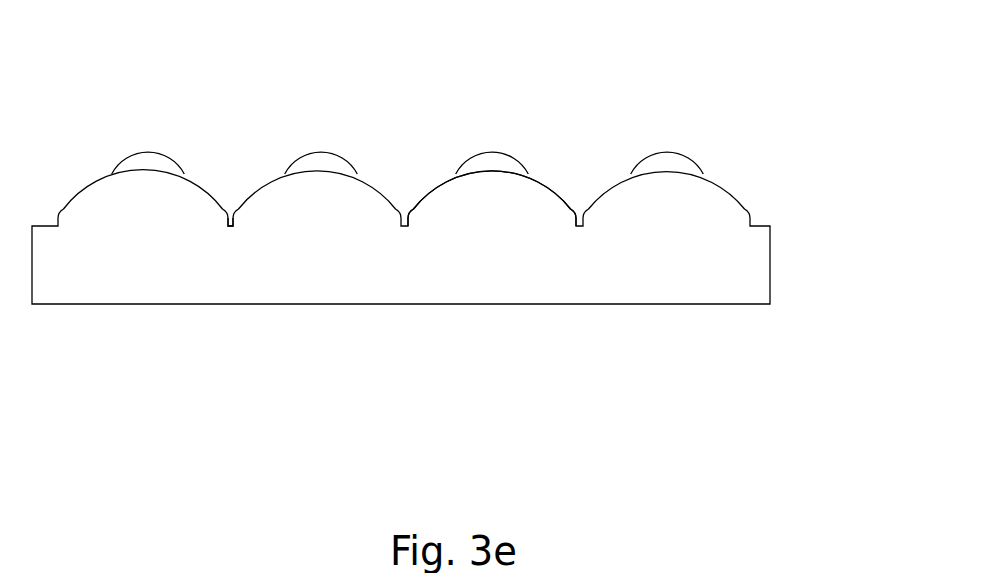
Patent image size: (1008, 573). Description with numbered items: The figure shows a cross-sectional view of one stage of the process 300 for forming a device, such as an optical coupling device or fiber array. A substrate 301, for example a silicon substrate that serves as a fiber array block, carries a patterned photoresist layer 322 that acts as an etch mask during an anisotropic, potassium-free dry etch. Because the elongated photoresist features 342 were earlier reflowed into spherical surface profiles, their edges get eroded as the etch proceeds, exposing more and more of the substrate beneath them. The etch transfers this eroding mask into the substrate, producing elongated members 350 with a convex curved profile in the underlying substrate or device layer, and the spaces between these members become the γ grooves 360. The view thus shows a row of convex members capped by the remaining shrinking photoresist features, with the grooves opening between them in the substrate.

The process 300 is at (460, 490).
The substrate 301 is at (770, 255).
The patterned photoresist layer 322 is at (692, 156).
The photoresist features with spherical surface profiles 342 is at (300, 153).
The elongated members 350 is at (502, 223).
The γ grooves 360 is at (231, 227).